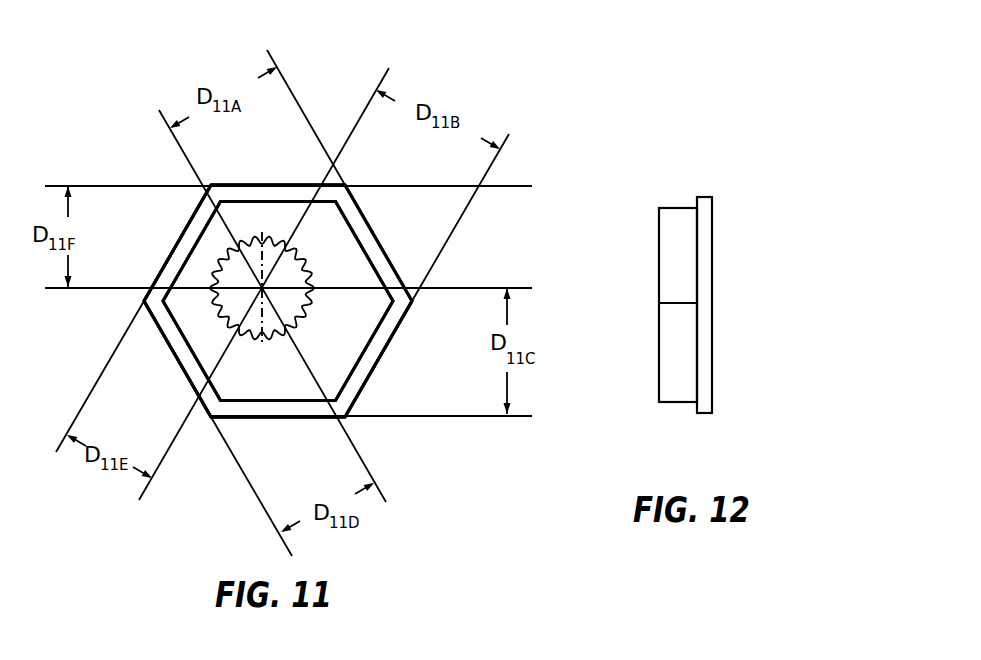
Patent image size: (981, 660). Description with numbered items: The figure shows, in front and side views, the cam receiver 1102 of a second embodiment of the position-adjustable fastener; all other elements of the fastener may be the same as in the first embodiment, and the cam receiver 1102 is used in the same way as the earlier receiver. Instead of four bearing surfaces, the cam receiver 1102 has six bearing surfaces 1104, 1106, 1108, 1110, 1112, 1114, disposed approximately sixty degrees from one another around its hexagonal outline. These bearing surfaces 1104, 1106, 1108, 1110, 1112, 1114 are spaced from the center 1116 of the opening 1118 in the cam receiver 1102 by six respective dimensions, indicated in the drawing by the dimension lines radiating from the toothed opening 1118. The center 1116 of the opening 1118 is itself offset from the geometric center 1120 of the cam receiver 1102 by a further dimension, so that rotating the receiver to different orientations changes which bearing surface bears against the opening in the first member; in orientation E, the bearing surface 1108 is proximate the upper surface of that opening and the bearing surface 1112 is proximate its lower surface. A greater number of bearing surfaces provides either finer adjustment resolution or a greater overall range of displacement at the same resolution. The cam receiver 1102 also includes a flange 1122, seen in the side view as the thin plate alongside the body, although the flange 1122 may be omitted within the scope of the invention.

In FIG. 11, the cam receiver 1102 is at (483, 231).
In FIG. 12, the cam receiver 1102 is at (720, 316).
In FIG. 11, the bearing surface 1104 is at (278, 196).
In FIG. 11, the bearing surface 1106 is at (360, 216).
In FIG. 12, the bearing surface 1106 is at (672, 222).
In FIG. 11, the bearing surface 1108 is at (360, 372).
In FIG. 12, the bearing surface 1108 is at (677, 378).
In FIG. 11, the bearing surface 1110 is at (256, 417).
In FIG. 11, the bearing surface 1112 is at (179, 340).
In FIG. 11, the bearing surface 1114 is at (183, 243).
In FIG. 11, the center of the opening 1116 is at (255, 290).
In FIG. 11, the opening 1118 is at (292, 302).
In FIG. 11, the geometric center 1120 is at (270, 287).
In FIG. 11, the flange 1122 is at (350, 415).